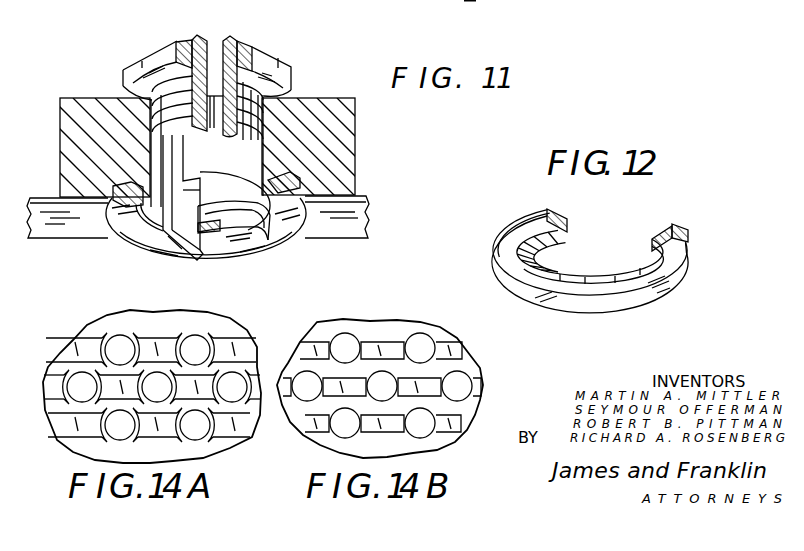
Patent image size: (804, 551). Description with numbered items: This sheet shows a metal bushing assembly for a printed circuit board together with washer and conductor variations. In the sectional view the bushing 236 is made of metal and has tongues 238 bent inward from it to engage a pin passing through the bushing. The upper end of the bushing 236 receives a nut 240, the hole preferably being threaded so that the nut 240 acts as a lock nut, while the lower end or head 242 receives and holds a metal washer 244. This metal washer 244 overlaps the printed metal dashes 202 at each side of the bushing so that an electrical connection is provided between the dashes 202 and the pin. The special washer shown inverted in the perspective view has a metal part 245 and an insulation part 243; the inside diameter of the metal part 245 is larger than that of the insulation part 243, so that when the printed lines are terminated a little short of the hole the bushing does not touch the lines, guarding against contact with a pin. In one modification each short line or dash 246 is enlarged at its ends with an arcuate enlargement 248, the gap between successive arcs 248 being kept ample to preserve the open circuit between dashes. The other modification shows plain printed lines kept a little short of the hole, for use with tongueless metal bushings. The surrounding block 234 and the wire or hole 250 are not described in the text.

In FIG. 11, the printed metal dashes 202 is at (64, 230).
In FIG. 11, the insulating body 234 is at (348, 150).
In FIG. 11, the bushing 236 is at (264, 125).
In FIG. 11, the tongues 238 is at (172, 248).
In FIG. 11, the nut 240 is at (272, 63).
In FIG. 11, the head 242 is at (271, 232).
In FIG. 12, the insulation part 243 is at (677, 225).
In FIG. 11, the metal washer 244 is at (228, 253).
In FIG. 12, the metal part 245 is at (682, 252).
In FIG. 14A, the short line or dash 246 is at (78, 348).
In FIG. 14A, the arcuate enlargement 248 is at (133, 337).
In FIG. 14A, the lead wire 250 is at (118, 335).